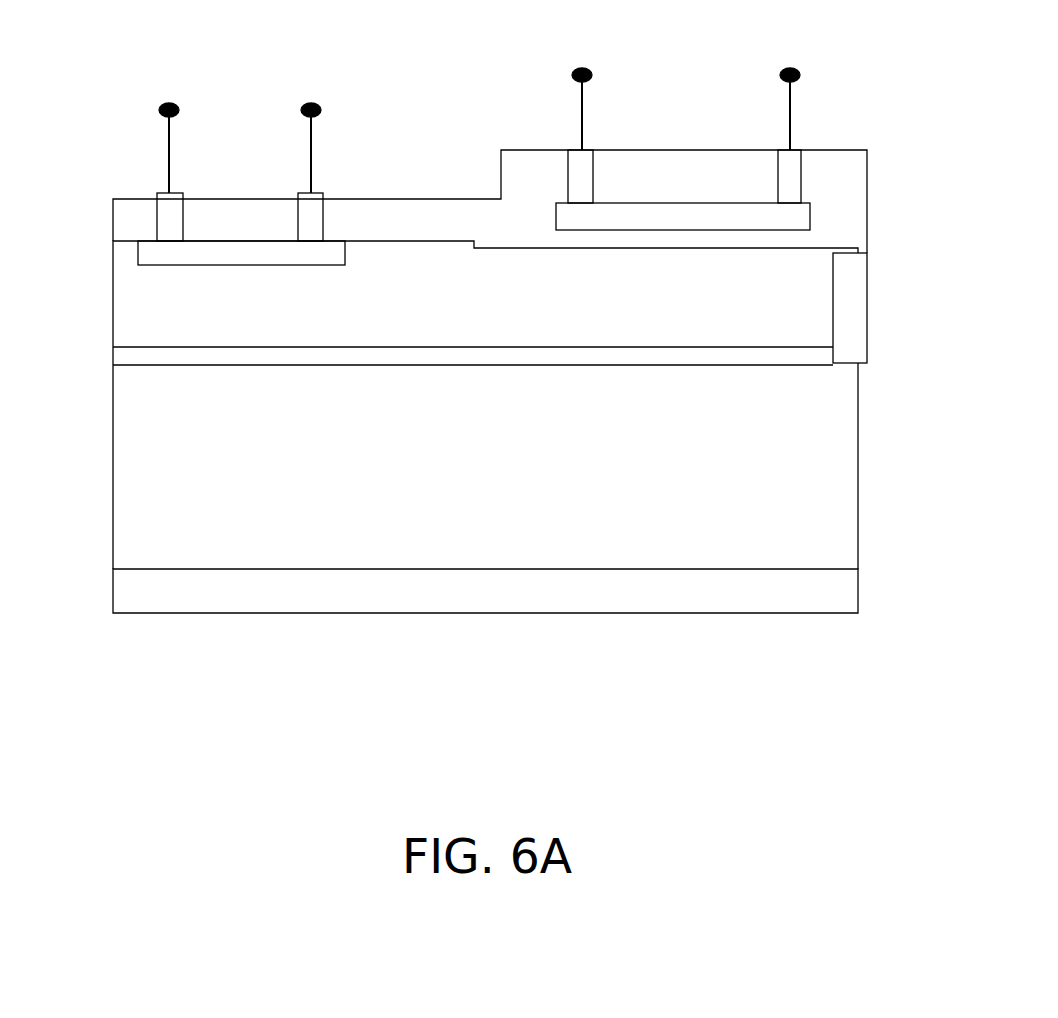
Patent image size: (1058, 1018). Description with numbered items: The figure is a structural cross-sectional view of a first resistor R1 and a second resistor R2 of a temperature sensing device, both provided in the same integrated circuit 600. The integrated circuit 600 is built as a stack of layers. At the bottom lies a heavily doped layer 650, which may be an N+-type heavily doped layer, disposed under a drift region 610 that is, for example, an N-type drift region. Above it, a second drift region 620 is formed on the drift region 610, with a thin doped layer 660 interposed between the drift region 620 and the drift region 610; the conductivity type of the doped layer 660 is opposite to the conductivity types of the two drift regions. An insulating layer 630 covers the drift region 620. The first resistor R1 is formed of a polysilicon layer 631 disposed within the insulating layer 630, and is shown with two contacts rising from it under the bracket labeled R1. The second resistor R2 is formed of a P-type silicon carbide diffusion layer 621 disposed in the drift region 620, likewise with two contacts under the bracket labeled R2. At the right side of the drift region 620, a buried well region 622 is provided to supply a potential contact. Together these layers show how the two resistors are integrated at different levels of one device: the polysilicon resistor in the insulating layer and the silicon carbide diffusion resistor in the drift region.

The integrated circuit 600 is at (900, 705).
The drift region 610 is at (832, 480).
The drift region 620 is at (163, 317).
The P-type silicon carbide diffusion layer 621 is at (163, 255).
The buried well region 622 is at (850, 315).
The insulating layer 630 is at (832, 228).
The polysilicon layer 631 is at (795, 222).
The heavily doped layer 650 is at (163, 593).
The doped layer 660 is at (163, 357).
The first resistor R1 is at (815, 49).
The second resistor R2 is at (340, 84).